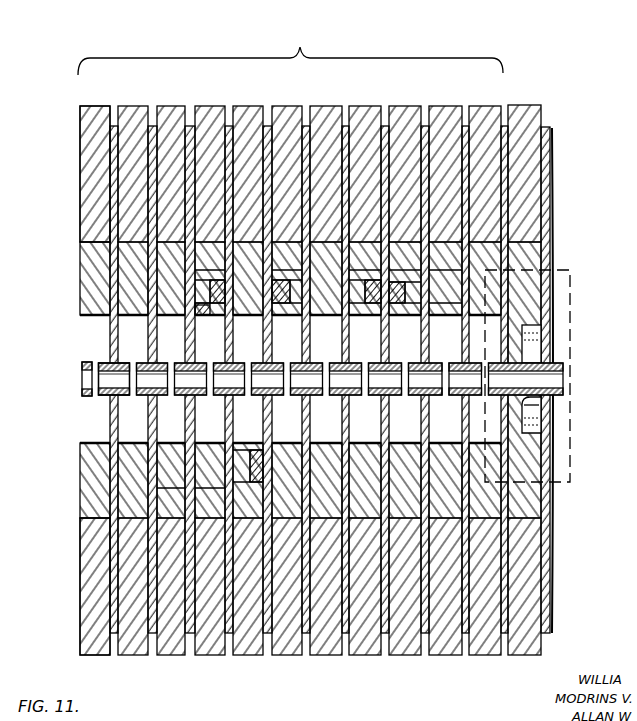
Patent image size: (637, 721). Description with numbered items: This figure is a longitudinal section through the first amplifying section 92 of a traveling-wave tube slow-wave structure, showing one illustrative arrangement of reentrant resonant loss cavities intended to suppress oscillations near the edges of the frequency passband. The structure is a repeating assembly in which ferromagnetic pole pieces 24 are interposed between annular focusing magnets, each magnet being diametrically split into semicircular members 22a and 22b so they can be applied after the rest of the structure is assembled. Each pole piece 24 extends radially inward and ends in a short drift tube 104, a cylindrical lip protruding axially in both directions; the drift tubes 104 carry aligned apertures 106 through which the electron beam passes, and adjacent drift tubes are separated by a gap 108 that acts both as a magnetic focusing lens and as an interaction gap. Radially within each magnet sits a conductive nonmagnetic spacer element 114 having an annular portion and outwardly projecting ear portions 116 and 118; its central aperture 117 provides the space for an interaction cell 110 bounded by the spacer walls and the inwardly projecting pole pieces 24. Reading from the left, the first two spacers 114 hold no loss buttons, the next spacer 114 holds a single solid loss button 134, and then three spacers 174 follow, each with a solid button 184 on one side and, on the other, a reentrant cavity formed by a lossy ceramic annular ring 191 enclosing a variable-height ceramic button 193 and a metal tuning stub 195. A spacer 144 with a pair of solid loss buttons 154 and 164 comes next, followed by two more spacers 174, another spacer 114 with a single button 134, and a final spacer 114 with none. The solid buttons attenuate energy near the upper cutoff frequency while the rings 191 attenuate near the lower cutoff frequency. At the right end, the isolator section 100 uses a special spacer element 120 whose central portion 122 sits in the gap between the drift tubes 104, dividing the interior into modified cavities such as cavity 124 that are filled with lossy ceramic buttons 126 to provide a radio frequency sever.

The first amplifying section 92 is at (290, 51).
The semicircular member 22a is at (104, 656).
The semicircular member 22b is at (165, 106).
The ferromagnetic pole piece 24 is at (114, 634).
The isolator section 100 is at (570, 481).
The drift tube 104 is at (85, 398).
The aperture 106 is at (143, 367).
The gap 108 is at (98, 361).
The interaction cell 110 is at (259, 348).
The slow-wave circuit spacer element 114 is at (176, 318).
The ear portion 116 is at (80, 508).
The central aperture 117 is at (92, 316).
The ear portion 118 is at (80, 262).
The special spacer element 120 is at (537, 305).
The central portion 122 is at (523, 350).
The modified cavity 124 is at (537, 430).
The lossy ceramic button 126 is at (533, 410).
The solid loss button 134 is at (443, 320).
The slow-wave circuit spacer element 144 is at (331, 348).
The loss button 154 is at (330, 442).
The loss button 164 is at (335, 318).
The slow-wave circuit spacer element 174 is at (288, 318).
The solid cylindrical button 184 is at (214, 442).
The annular ring 191 is at (201, 314).
The ceramic button 193 is at (205, 289).
The metal stub 195 is at (218, 318).